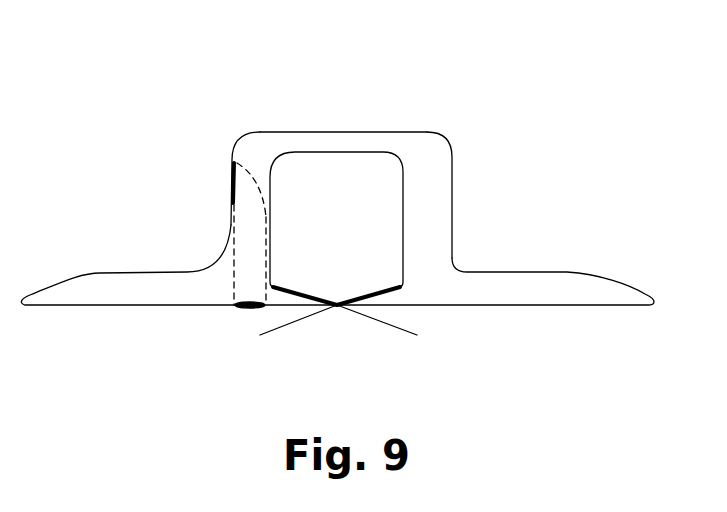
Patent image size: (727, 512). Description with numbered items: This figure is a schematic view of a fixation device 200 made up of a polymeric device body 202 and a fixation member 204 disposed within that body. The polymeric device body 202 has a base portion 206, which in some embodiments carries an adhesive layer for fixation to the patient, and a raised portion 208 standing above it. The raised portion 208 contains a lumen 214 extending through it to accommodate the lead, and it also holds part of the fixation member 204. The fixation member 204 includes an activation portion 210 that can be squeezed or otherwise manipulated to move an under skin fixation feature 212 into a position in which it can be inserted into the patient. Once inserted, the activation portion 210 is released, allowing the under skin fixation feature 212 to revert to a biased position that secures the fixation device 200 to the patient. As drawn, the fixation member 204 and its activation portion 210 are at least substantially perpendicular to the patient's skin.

The fixation device 200 is at (570, 120).
The polymeric device body 202 is at (447, 127).
The fixation member 204 is at (390, 217).
The base portion 206 is at (102, 292).
The raised portion 208 is at (293, 140).
The activation portion 210 is at (405, 178).
The under skin fixation feature 212 is at (385, 325).
The lumen 214 is at (248, 230).